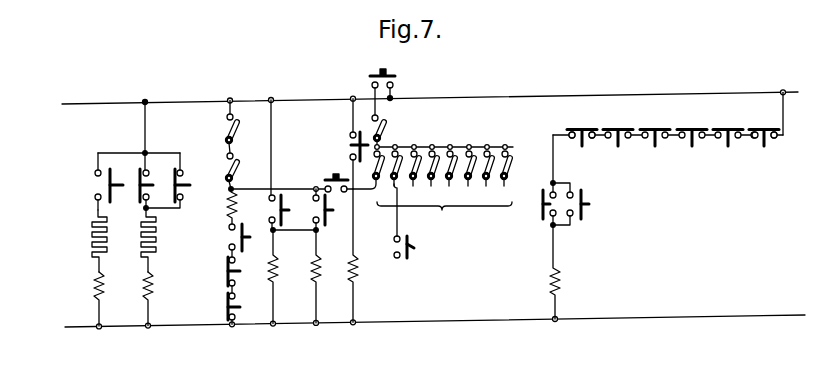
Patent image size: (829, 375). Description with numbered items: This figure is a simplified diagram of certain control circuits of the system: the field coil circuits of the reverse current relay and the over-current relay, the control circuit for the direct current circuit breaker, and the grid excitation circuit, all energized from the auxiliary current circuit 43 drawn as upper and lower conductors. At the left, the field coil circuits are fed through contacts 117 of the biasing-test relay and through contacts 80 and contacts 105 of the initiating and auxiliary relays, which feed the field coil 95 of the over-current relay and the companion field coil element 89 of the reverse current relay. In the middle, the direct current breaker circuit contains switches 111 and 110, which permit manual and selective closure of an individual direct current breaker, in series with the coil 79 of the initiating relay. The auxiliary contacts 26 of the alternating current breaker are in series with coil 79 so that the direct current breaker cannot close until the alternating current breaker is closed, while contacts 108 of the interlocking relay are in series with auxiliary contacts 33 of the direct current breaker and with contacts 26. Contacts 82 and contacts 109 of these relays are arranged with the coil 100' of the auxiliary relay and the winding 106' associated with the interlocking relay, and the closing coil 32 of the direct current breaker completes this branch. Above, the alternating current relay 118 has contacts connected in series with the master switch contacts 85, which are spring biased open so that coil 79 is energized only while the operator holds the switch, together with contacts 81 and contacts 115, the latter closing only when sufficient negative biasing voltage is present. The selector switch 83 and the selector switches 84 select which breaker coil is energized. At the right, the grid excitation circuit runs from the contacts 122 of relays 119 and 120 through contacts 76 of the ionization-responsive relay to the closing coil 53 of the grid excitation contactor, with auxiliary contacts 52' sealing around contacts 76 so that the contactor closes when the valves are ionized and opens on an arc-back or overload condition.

The auxiliary circuit 43 is at (71, 104).
The contacts 117 is at (97, 171).
The contacts 80 is at (154, 180).
The contacts 105 is at (183, 199).
The field coil 95 is at (104, 287).
The field coil and resistor 89 is at (154, 287).
The switch 111 is at (228, 126).
The switch 110 is at (228, 163).
The coil 79 is at (233, 226).
The auxiliary contacts 26 is at (229, 248).
The contacts 108 is at (227, 276).
The auxiliary contacts 33 is at (237, 299).
The contacts 82 is at (270, 200).
The contacts 109 is at (315, 209).
The resistor 106' is at (288, 277).
The coils 100' is at (331, 276).
The closing coil 32 is at (362, 270).
The alternating current relay 118 is at (379, 75).
The master switch contacts 85 is at (382, 131).
The contacts 81 is at (350, 145).
The contacts 115 is at (331, 178).
The selector switch 83 is at (374, 172).
The selector switch 84 is at (403, 184).
The contacts 76 is at (551, 190).
The auxiliary contacts 52' is at (578, 209).
The closing coil 53 is at (562, 280).
The contacts 122 is at (618, 146).
The relay 119 is at (614, 157).
The relay 120 is at (731, 157).